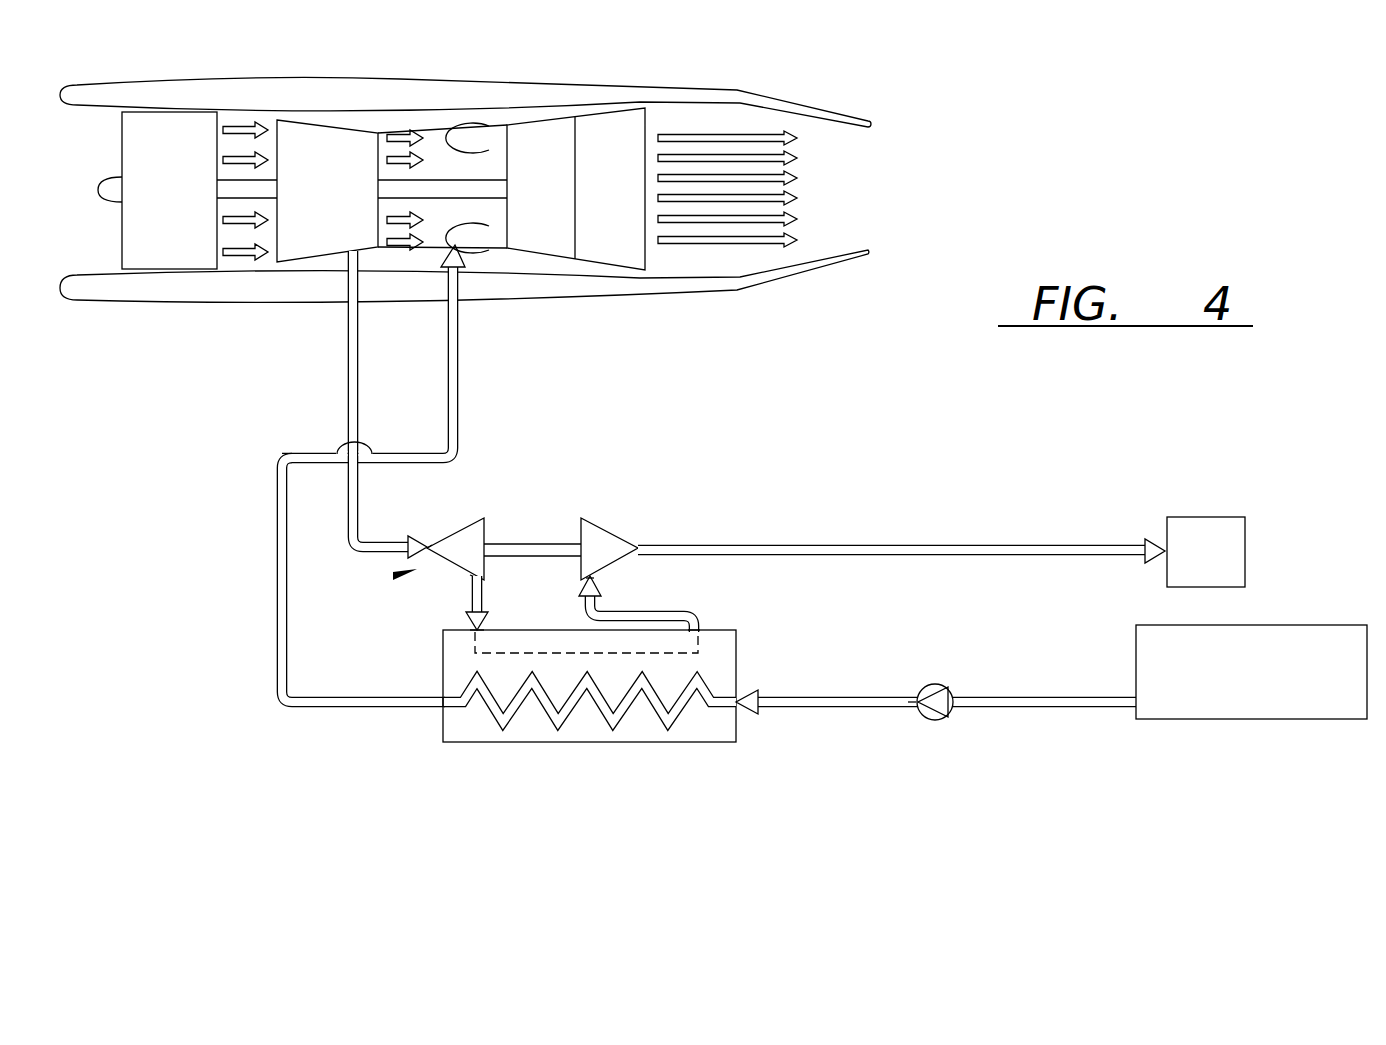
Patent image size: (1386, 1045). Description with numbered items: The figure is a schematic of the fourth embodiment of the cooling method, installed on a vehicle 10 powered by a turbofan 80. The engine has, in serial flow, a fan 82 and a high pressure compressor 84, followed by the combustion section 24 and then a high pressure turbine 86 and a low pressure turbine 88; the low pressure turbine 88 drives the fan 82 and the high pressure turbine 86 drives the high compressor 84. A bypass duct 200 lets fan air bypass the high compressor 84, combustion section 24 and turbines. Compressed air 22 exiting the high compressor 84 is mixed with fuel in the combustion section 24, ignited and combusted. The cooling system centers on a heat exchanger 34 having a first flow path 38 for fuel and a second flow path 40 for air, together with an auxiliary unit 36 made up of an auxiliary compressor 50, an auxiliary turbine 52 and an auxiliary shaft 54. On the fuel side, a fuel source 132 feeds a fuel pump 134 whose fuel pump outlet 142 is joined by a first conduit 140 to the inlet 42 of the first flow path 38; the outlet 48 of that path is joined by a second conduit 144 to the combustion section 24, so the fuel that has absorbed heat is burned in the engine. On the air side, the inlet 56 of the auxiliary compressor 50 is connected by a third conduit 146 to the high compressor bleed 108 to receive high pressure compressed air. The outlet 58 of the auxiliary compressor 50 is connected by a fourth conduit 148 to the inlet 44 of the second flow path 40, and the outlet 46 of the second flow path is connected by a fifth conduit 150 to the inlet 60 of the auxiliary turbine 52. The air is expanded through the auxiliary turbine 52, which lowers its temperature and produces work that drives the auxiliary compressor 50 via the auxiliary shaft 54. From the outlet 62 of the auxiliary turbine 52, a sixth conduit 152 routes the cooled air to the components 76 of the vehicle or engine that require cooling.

The vehicle 10 is at (1040, 785).
The compressed air 22 is at (422, 158).
The combustion section 24 is at (482, 127).
The heat exchanger 34 is at (485, 730).
The auxiliary unit 36 is at (395, 575).
The first flow path 38 is at (685, 710).
The second flow path 40 is at (495, 655).
The inlet of the first flow path 42 is at (747, 716).
The inlet of the second flow path 44 is at (470, 625).
The outlet of the second flow path 46 is at (703, 628).
The outlet of the first flow path 48 is at (440, 707).
The auxiliary compressor 50 is at (482, 520).
The auxiliary turbine 52 is at (603, 520).
The auxiliary shaft 54 is at (537, 543).
The inlet of the auxiliary compressor 56 is at (428, 545).
The outlet of the auxiliary compressor 58 is at (470, 577).
The inlet of the auxiliary turbine 60 is at (597, 580).
The outlet of the auxiliary turbine 62 is at (640, 545).
The components 76 is at (1220, 517).
The turbofan 80 is at (641, 76).
The fan 82 is at (182, 118).
The high pressure compressor 84 is at (327, 133).
The high pressure turbine 86 is at (560, 192).
The low pressure turbine 88 is at (633, 192).
The high compressor bleed 108 is at (345, 262).
The fuel source 132 is at (1273, 625).
The fuel pump 134 is at (952, 692).
The first conduit 140 is at (830, 697).
The fuel pump outlet 142 is at (913, 715).
The second conduit 144 is at (275, 602).
The third conduit 146 is at (347, 360).
The fourth conduit 148 is at (483, 598).
The fifth conduit 150 is at (678, 612).
The sixth conduit 152 is at (857, 547).
The bypass duct 200 is at (478, 263).